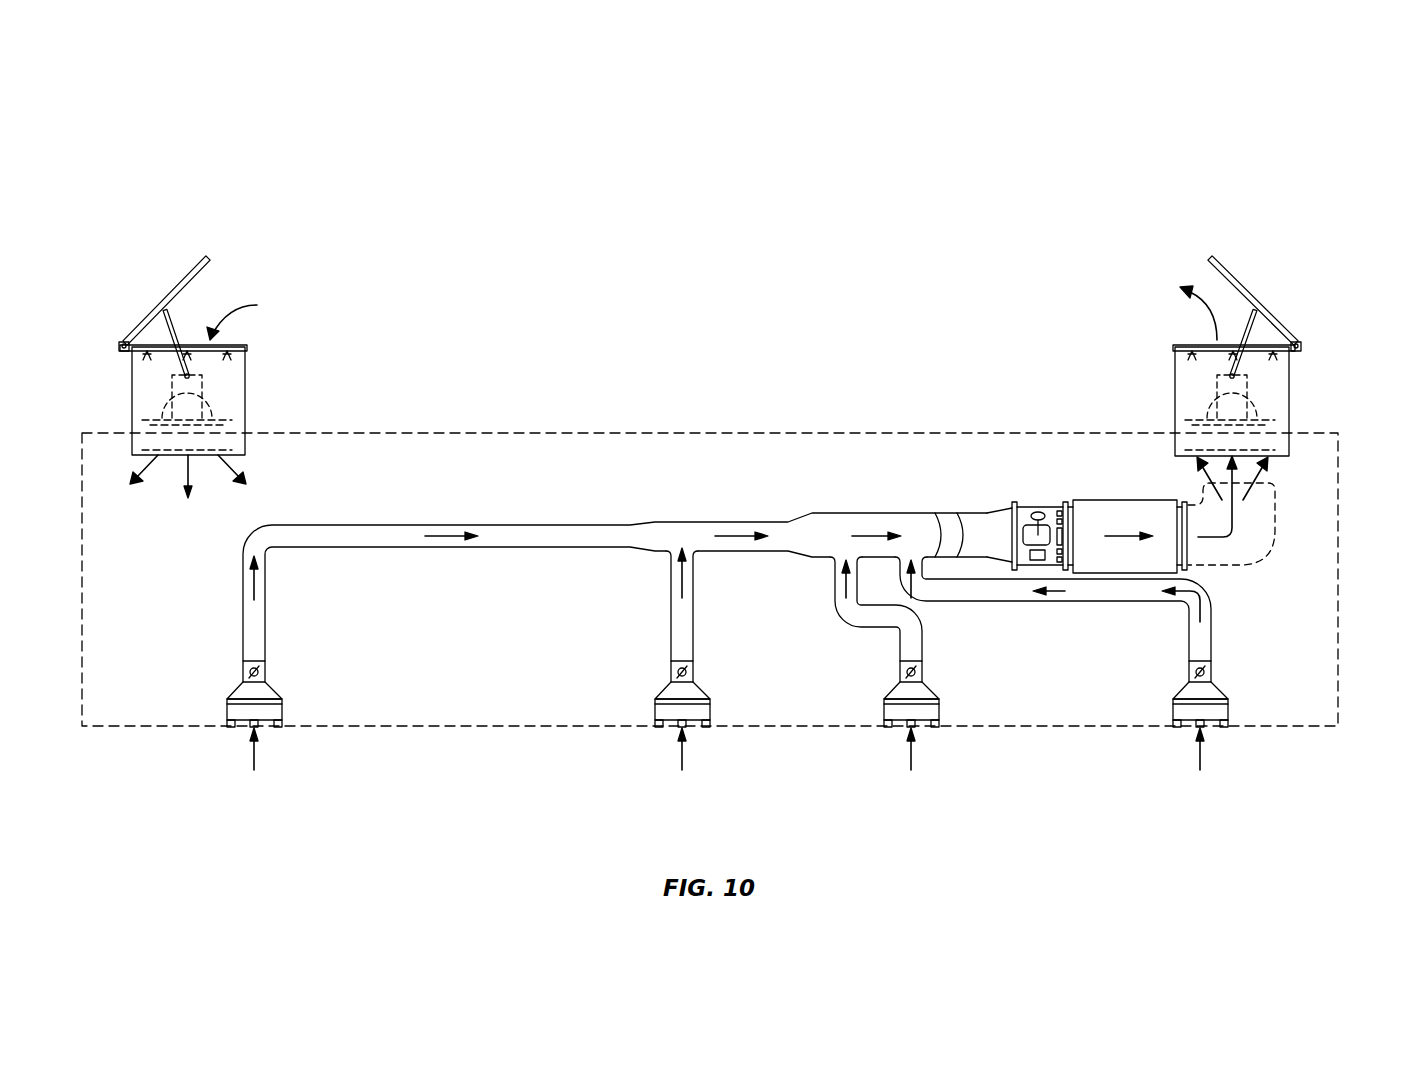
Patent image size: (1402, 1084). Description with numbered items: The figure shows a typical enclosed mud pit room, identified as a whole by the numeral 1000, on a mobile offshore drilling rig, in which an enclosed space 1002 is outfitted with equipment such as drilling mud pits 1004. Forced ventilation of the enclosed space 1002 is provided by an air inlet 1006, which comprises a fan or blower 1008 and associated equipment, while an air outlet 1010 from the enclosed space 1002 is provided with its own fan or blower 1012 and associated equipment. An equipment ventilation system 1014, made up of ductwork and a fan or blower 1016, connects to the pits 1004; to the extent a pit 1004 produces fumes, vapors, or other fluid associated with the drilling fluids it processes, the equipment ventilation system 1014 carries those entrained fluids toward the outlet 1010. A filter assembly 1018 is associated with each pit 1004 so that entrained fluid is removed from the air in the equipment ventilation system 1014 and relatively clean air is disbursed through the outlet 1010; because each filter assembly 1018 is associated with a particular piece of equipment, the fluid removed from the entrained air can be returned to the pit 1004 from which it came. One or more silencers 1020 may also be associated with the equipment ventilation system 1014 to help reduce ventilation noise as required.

The air treatment system 1000 is at (1203, 190).
The enclosed space 1002 is at (132, 728).
The drilling mud pits 1004 is at (282, 712).
The air inlet 1006 is at (132, 385).
The fan or blower 1008 is at (185, 415).
The air outlet 1010 is at (1289, 385).
The fan or blower 1012 is at (1233, 415).
The equipment ventilation system 1014 is at (400, 522).
The fan or blower 1016 is at (1037, 533).
The filter assemblies 1018 is at (243, 690).
The silencers 1020 is at (1135, 512).